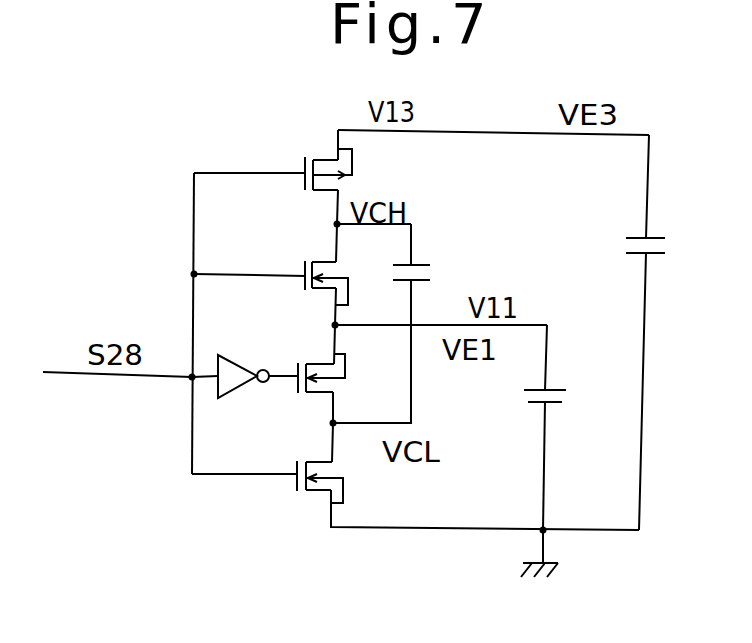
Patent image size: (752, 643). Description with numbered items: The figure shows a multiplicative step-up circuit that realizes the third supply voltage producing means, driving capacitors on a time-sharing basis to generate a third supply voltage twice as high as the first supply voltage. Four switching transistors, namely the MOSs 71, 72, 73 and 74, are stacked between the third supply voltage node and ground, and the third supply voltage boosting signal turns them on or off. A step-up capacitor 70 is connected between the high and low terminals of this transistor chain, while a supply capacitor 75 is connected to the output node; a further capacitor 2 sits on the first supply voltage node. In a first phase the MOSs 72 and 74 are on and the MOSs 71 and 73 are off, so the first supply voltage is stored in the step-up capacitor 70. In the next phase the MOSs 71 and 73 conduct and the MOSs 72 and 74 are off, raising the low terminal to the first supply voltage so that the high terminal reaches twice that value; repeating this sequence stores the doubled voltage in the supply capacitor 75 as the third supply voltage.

The MOS 71 is at (303, 164).
The MOS 72 is at (304, 263).
The MOS 73 is at (347, 367).
The MOS 74 is at (345, 490).
The step-up capacitor 70 is at (428, 265).
The supply capacitor 75 is at (637, 237).
The capacitor 2 is at (537, 402).